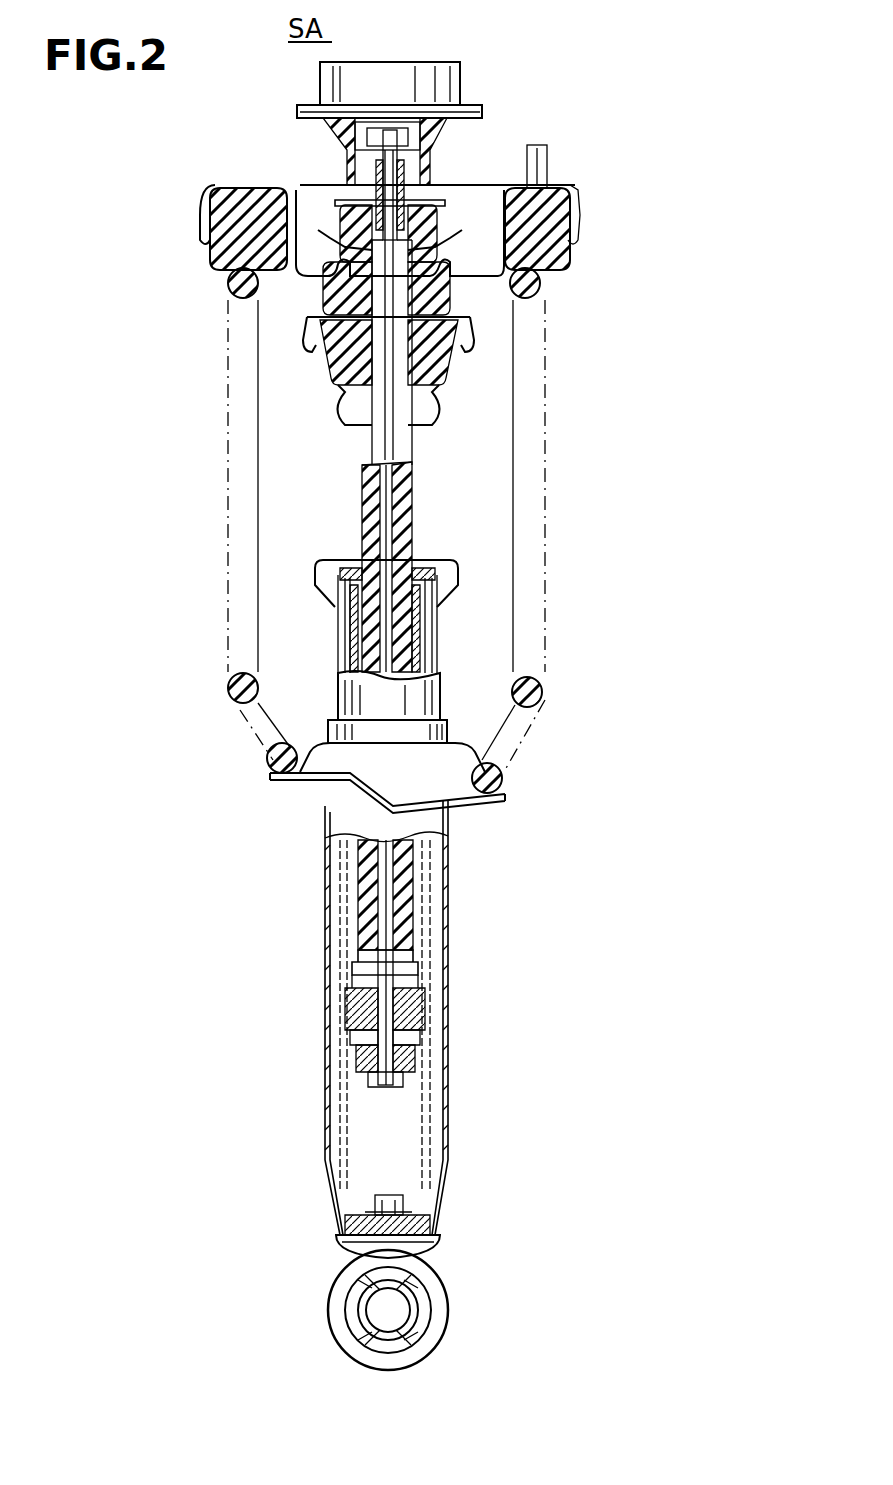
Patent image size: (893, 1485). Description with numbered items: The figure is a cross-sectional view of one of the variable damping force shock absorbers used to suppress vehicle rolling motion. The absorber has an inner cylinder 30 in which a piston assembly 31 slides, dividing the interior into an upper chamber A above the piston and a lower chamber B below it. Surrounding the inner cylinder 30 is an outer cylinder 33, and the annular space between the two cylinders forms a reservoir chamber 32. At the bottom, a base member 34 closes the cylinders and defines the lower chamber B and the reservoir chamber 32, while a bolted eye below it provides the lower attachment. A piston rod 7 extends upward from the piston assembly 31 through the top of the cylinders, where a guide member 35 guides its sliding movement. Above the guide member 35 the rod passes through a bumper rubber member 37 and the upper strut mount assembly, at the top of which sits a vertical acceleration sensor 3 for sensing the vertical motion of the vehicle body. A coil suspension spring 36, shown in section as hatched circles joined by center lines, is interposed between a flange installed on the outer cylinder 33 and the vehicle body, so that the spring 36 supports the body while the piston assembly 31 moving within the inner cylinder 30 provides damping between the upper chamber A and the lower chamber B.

The vertical acceleration sensor 3 is at (460, 68).
The piston rod 7 is at (348, 628).
The inner cylinder 30 is at (432, 1078).
The piston assembly 31 is at (425, 1005).
The reservoir chamber 32 is at (333, 1110).
The outer cylinder 33 is at (325, 990).
The base member 34 is at (430, 1218).
The guide member 35 is at (440, 607).
The suspension spring 36 is at (543, 690).
The bumper rubber member 37 is at (460, 370).
The upper chamber A is at (420, 858).
The lower chamber B is at (408, 1158).